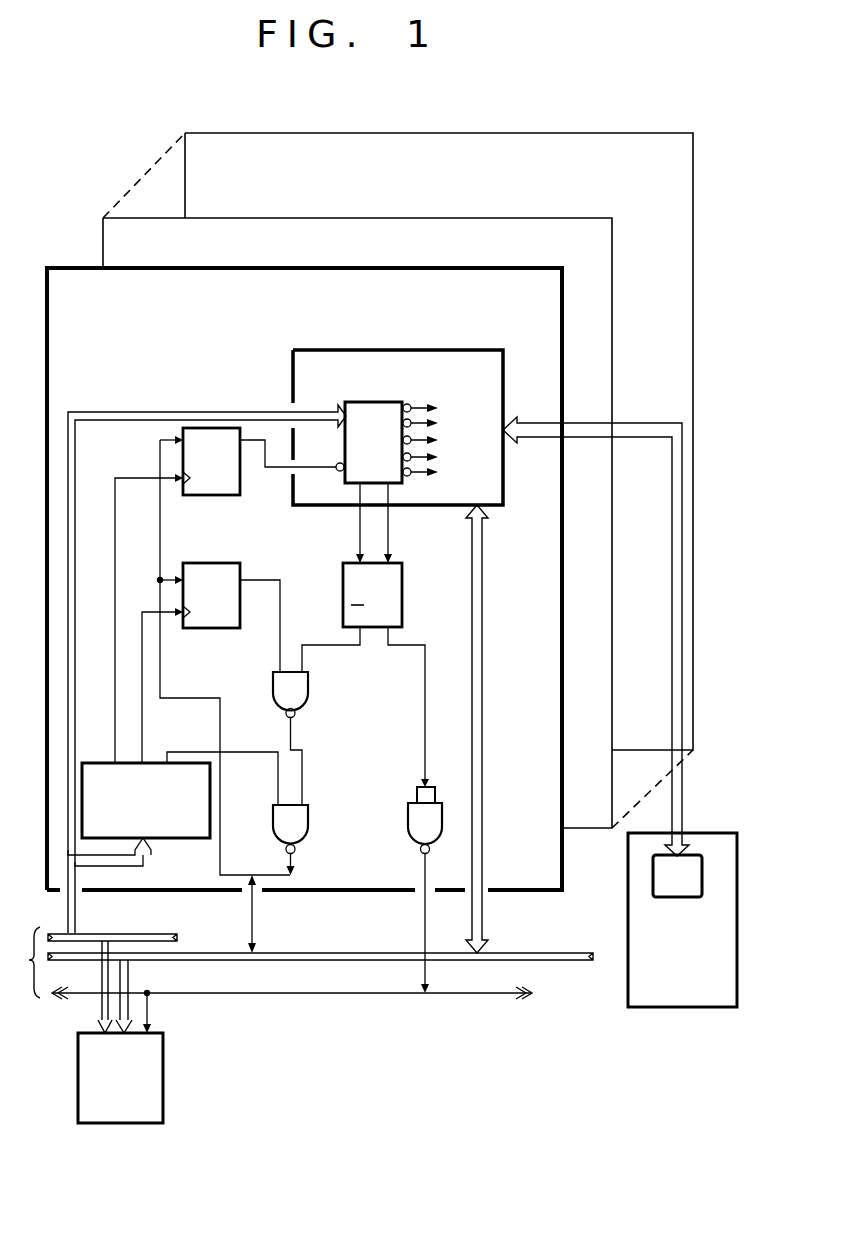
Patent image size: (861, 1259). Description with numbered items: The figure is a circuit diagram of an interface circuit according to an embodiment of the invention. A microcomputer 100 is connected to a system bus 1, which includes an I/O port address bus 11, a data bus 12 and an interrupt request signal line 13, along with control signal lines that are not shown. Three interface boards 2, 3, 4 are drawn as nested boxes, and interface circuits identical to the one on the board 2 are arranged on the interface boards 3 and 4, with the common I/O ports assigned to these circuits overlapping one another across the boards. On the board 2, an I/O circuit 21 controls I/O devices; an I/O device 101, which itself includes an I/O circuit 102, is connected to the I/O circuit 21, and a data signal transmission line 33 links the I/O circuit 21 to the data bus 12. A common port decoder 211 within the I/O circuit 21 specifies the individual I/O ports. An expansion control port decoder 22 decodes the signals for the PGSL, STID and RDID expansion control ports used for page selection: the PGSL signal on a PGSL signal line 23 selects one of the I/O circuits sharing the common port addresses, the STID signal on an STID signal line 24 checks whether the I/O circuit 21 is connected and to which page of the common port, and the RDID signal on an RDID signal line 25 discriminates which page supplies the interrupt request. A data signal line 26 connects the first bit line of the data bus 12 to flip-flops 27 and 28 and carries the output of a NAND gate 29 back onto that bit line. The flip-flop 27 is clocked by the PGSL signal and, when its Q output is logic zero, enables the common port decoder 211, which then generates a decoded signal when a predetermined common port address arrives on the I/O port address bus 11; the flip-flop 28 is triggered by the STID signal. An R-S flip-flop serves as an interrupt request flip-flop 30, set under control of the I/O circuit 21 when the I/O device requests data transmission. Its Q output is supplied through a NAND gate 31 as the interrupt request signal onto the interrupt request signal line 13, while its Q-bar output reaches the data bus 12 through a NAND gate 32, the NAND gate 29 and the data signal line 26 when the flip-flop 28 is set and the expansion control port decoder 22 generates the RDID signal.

The system bus 1 is at (27, 962).
The interface board 2 is at (438, 268).
The interface board 3 is at (519, 218).
The interface board 4 is at (621, 134).
The I/O port address bus 11 is at (136, 933).
The data bus 12 is at (554, 951).
The interrupt request signal line 13 is at (378, 994).
The I/O circuit 21 is at (414, 328).
The expansion control port decoder 22 is at (153, 838).
The PGSL signal line 23 is at (114, 653).
The STID signal line 24 is at (143, 712).
The RDID signal line 25 is at (238, 753).
The data signal line 26 is at (254, 925).
The flip-flop 27 is at (222, 496).
The flip-flop 28 is at (215, 570).
The NAND gate 29 is at (300, 832).
The interrupt request flip-flop 30 is at (402, 598).
The NAND gate 31 is at (411, 820).
The NAND gate 32 is at (300, 688).
The data signal transmission line 33 is at (484, 690).
The microcomputer 100 is at (151, 1071).
The I/O device 101 is at (668, 995).
The I/O circuit 102 is at (690, 866).
The common port decoder 211 is at (382, 413).